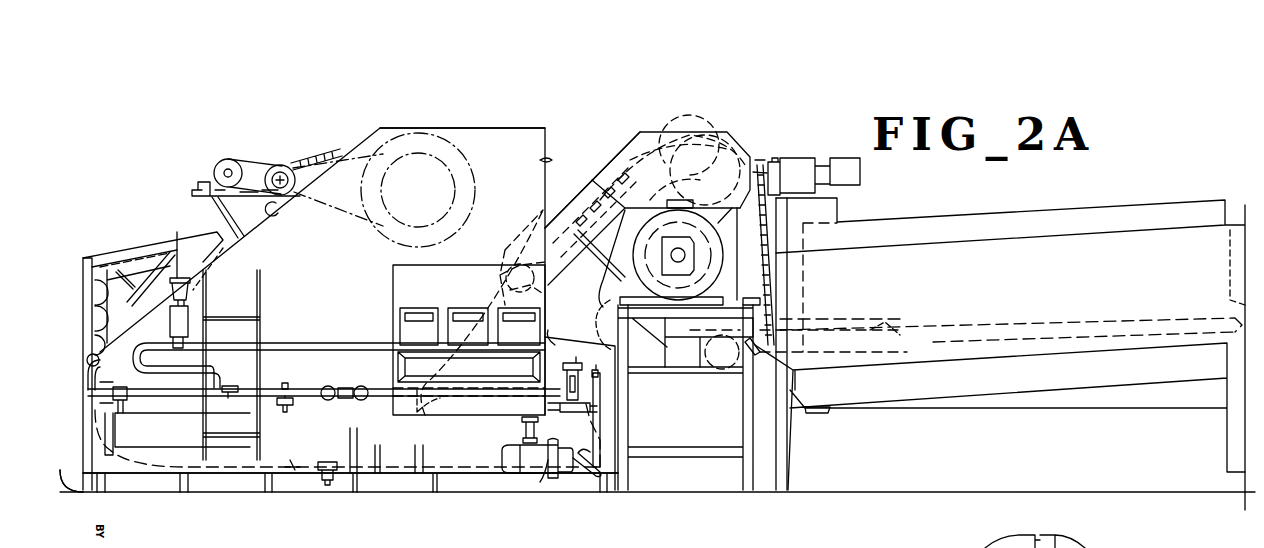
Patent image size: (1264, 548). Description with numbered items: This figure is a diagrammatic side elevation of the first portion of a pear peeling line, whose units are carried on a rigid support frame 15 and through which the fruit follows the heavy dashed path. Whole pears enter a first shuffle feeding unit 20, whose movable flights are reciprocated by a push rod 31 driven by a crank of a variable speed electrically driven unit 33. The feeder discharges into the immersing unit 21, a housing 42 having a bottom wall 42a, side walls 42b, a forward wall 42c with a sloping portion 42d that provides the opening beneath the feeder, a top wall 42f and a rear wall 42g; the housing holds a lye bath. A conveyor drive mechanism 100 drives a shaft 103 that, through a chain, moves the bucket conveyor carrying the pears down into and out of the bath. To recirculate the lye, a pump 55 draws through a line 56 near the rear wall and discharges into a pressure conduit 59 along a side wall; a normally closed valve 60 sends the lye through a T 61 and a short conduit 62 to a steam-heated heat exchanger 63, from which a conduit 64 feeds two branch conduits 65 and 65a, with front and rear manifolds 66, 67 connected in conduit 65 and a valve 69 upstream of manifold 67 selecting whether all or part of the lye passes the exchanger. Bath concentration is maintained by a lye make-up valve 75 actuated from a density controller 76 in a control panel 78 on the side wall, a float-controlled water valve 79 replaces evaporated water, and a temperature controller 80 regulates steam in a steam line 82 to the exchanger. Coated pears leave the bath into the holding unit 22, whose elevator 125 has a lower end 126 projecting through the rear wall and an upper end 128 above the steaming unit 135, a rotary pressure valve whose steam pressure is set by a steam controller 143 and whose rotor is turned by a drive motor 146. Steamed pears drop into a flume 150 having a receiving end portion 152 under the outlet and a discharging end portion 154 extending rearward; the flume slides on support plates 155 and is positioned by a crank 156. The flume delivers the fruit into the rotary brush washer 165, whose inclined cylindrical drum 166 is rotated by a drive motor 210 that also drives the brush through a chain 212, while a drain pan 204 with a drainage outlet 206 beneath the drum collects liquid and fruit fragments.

The support frame 15 is at (774, 428).
The first shuffle feeding unit 20 is at (202, 228).
The immersing unit 21 is at (356, 142).
The holding unit 22 is at (634, 140).
The push rod 31 is at (151, 313).
The variable speed electrically driven unit 33 is at (95, 326).
The housing 42 is at (527, 138).
The bottom wall 42a is at (218, 476).
The side walls 42b is at (334, 277).
The forward wall 42c is at (75, 482).
The sloping portion 42d is at (278, 213).
The top wall 42f is at (432, 127).
The rear wall 42g is at (540, 160).
The pump 55 is at (545, 482).
The line 56 is at (590, 478).
The pressure conduit 59 is at (540, 426).
The valve 60 is at (378, 380).
The T 61 is at (428, 405).
The short conduit 62 is at (407, 410).
The heat exchanger 63 is at (166, 437).
The conduit 64 is at (128, 404).
The branch conduit 65 is at (268, 390).
The branch conduit 65a is at (153, 370).
The front manifold 66 is at (230, 386).
The rear manifold 67 is at (343, 387).
The valve 69 is at (330, 400).
The lye make-up valve 75 is at (502, 446).
The density controller 76 is at (480, 342).
The control panel 78 is at (393, 296).
The float-controlled water valve 79 is at (580, 355).
The temperature controller 80 is at (430, 342).
The steam line 82 is at (284, 346).
The conveyor drive mechanism 100 is at (258, 158).
The shaft 103 is at (295, 180).
The elevator 125 is at (735, 130).
The lower end 126 is at (503, 300).
The upper end 128 is at (740, 152).
The steaming unit 135 is at (706, 257).
The steam controller 143 is at (534, 342).
The drive motor 146 is at (722, 369).
The flume 150 is at (760, 323).
The receiving end portion 152 is at (665, 367).
The discharging end portion 154 is at (920, 340).
The support plate 155 is at (760, 300).
The crank 156 is at (790, 368).
The rotary brush washer 165 is at (1050, 218).
The cylindrical drum 166 is at (980, 215).
The drain pan 204 is at (1078, 384).
The drainage outlet 206 is at (828, 413).
The drive motor 210 is at (810, 188).
The chain 212 is at (763, 212).